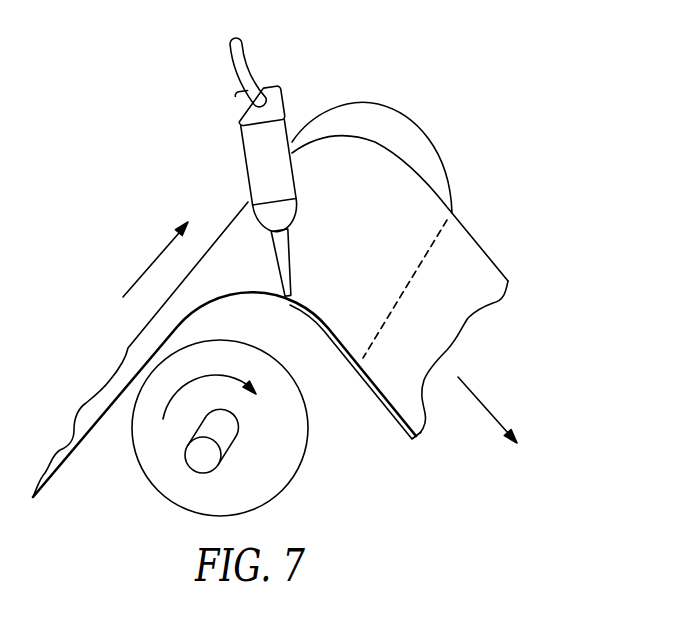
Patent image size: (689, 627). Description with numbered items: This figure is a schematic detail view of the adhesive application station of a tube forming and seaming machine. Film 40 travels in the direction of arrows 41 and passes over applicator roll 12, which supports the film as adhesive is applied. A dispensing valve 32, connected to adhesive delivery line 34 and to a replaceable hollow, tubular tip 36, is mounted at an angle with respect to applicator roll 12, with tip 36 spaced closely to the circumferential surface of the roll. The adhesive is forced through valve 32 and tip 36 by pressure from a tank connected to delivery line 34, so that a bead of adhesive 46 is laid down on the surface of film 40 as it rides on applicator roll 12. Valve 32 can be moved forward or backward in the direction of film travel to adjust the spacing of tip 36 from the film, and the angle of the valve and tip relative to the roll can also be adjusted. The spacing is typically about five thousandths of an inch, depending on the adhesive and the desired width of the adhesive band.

The applicator roll 12 is at (149, 467).
The dispensing valve 32 is at (246, 153).
The adhesive delivery line 34 is at (236, 69).
The tubular tip 36 is at (290, 255).
The film 40 is at (472, 248).
The arrows 41 is at (152, 260).
The bead of adhesive 46 is at (394, 412).